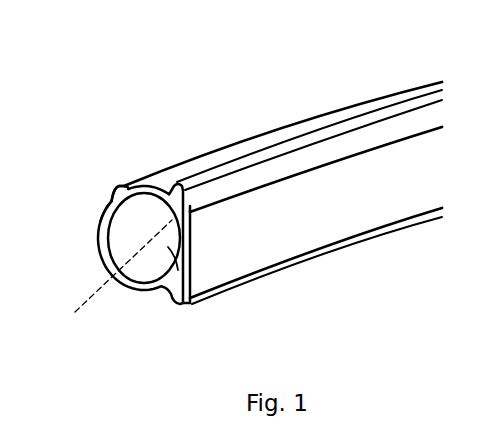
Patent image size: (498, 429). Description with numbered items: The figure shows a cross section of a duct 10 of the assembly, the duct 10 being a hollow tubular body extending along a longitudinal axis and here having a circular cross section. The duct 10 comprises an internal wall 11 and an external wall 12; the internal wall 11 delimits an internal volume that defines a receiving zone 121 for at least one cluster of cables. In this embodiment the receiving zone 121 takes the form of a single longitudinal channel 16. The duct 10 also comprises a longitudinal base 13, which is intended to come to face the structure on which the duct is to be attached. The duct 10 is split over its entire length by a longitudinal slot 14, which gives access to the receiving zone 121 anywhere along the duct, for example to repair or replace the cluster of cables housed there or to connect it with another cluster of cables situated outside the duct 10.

The duct 10 is at (231, 82).
The internal wall 11 is at (108, 245).
The external wall 12 is at (100, 218).
The receiving zone 121 is at (159, 266).
The longitudinal base 13 is at (298, 243).
The longitudinal slot 14 is at (120, 188).
The single longitudinal channel 16 is at (166, 254).